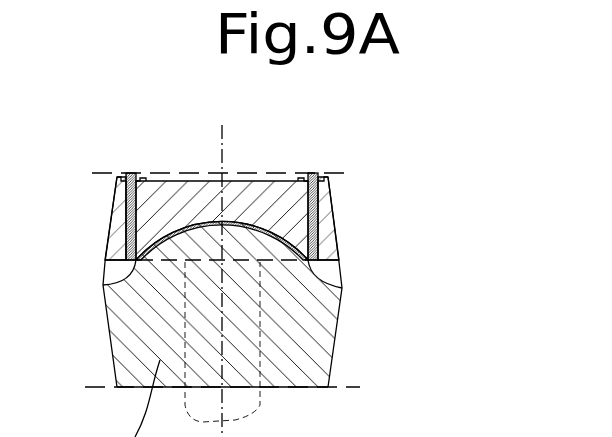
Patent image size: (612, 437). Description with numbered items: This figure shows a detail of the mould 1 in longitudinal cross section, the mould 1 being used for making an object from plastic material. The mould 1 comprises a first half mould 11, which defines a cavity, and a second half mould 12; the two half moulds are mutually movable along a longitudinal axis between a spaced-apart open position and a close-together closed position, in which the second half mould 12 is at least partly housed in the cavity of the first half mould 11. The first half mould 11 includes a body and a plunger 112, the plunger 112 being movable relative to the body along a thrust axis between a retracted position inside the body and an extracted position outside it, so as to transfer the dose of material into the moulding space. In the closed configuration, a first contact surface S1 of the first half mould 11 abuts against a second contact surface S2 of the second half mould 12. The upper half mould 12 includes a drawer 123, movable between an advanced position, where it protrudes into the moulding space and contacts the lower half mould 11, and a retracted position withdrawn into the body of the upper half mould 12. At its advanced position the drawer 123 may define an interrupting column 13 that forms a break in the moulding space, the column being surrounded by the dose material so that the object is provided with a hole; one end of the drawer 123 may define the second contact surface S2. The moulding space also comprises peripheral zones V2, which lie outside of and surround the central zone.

The mould 1 is at (108, 122).
The first half mould 11 is at (118, 327).
The second half mould 12 is at (175, 182).
The interrupting column 13 is at (334, 277).
The drawer 123 is at (128, 205).
The plunger 112 is at (262, 333).
The peripheral zones V2 is at (253, 222).
The first contact surface S1 is at (127, 260).
The second contact surface S2 is at (134, 263).